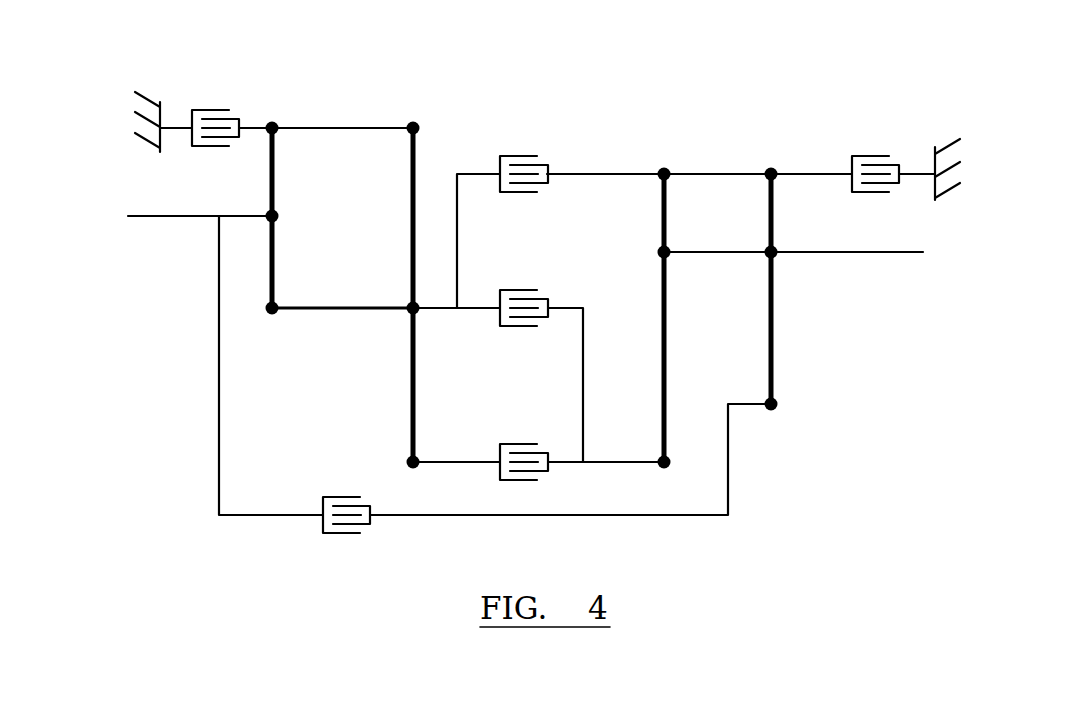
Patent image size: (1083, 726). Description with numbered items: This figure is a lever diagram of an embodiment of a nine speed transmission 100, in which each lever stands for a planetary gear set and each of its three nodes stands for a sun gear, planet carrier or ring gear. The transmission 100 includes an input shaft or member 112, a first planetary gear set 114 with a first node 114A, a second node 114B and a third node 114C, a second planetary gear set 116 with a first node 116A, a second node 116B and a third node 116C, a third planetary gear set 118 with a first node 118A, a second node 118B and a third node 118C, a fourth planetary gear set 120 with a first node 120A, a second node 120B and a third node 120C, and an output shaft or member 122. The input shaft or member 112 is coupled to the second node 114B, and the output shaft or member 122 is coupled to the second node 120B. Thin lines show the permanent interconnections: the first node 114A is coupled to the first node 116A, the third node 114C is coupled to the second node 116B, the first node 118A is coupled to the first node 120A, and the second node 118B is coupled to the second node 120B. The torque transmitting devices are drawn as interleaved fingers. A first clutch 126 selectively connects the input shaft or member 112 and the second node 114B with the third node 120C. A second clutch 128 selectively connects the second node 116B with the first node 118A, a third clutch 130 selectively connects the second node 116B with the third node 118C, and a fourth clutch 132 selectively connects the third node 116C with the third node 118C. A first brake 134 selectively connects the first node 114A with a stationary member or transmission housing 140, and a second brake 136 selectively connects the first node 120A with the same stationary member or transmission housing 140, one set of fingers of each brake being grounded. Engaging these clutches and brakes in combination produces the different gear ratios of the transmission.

The nine speed transmission 100 is at (795, 82).
The input shaft or member 112 is at (145, 214).
The first planetary gear set 114 is at (324, 238).
The first node of the first planetary gear set 114A is at (272, 121).
The second node of the first planetary gear set 114B is at (279, 215).
The third node of the first planetary gear set 114C is at (275, 305).
The second planetary gear set 116 is at (381, 264).
The first node of the second planetary gear set 116A is at (413, 121).
The second node of the second planetary gear set 116B is at (409, 312).
The third node of the second planetary gear set 116C is at (406, 461).
The third planetary gear set 118 is at (666, 357).
The first node of the third planetary gear set 118A is at (664, 168).
The second node of the third planetary gear set 118B is at (658, 250).
The third node of the third planetary gear set 118C is at (664, 469).
The fourth planetary gear set 120 is at (815, 295).
The first node of the fourth planetary gear set 120A is at (771, 168).
The second node of the fourth planetary gear set 120B is at (777, 250).
The third node of the fourth planetary gear set 120C is at (773, 411).
The output shaft or member 122 is at (860, 254).
The first clutch 126 is at (340, 534).
The second clutch 128 is at (525, 155).
The third clutch 130 is at (525, 289).
The fourth clutch 132 is at (525, 443).
The first brake 134 is at (212, 110).
The second brake 136 is at (862, 156).
The stationary member or transmission housing 140 is at (162, 146).